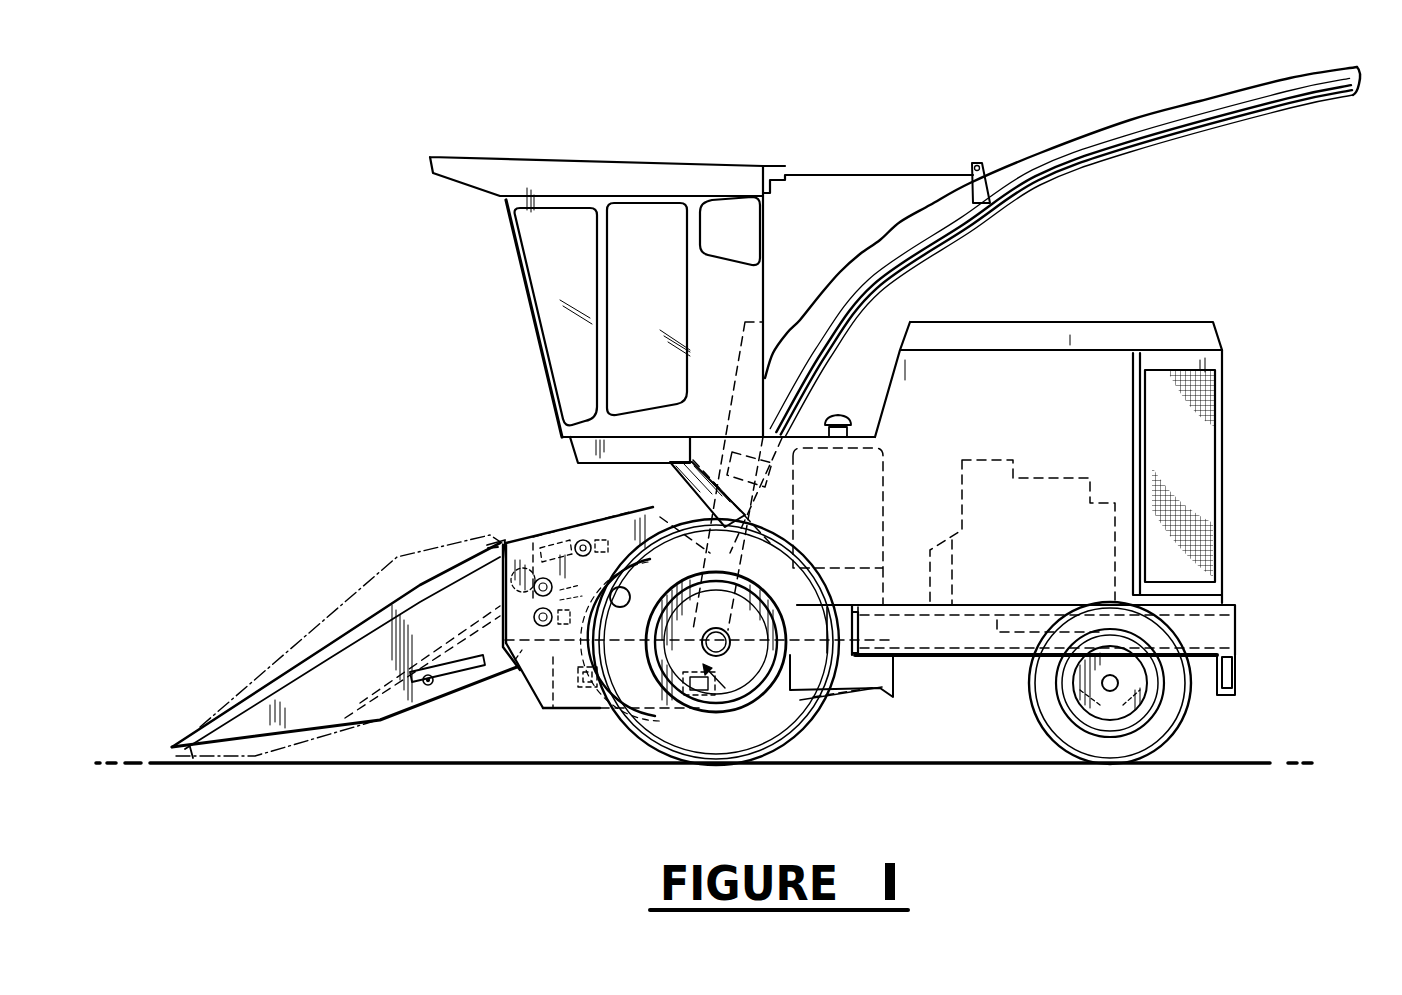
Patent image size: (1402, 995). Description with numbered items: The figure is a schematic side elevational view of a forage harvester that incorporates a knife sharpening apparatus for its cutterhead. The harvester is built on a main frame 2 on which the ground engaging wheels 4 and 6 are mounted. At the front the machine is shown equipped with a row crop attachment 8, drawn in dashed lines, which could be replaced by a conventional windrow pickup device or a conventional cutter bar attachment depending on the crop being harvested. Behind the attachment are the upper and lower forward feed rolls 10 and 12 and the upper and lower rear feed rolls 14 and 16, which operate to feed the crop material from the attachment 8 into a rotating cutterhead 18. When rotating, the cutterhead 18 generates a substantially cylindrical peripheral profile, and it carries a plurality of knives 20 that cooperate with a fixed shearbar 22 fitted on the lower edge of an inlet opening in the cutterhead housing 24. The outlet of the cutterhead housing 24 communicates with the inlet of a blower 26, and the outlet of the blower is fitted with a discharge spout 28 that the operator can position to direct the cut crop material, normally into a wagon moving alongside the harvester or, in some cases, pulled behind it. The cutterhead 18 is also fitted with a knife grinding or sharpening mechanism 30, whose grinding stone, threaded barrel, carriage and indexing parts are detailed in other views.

The main frame 2 is at (958, 656).
The ground engaging wheel 4 is at (832, 700).
The ground engaging wheel 6 is at (1192, 712).
The row crop attachment 8 is at (326, 622).
The upper forward feed roll 10 is at (490, 536).
The lower forward feed roll 12 is at (476, 662).
The upper rear feed roll 14 is at (533, 545).
The lower rear feed roll 16 is at (522, 660).
The cutterhead 18 is at (625, 560).
The knives 20 is at (600, 708).
The shearbar 22 is at (553, 707).
The cutterhead housing 24 is at (648, 700).
The blower 26 is at (743, 700).
The discharge spout 28 is at (1040, 192).
The sharpening mechanism 30 is at (592, 526).